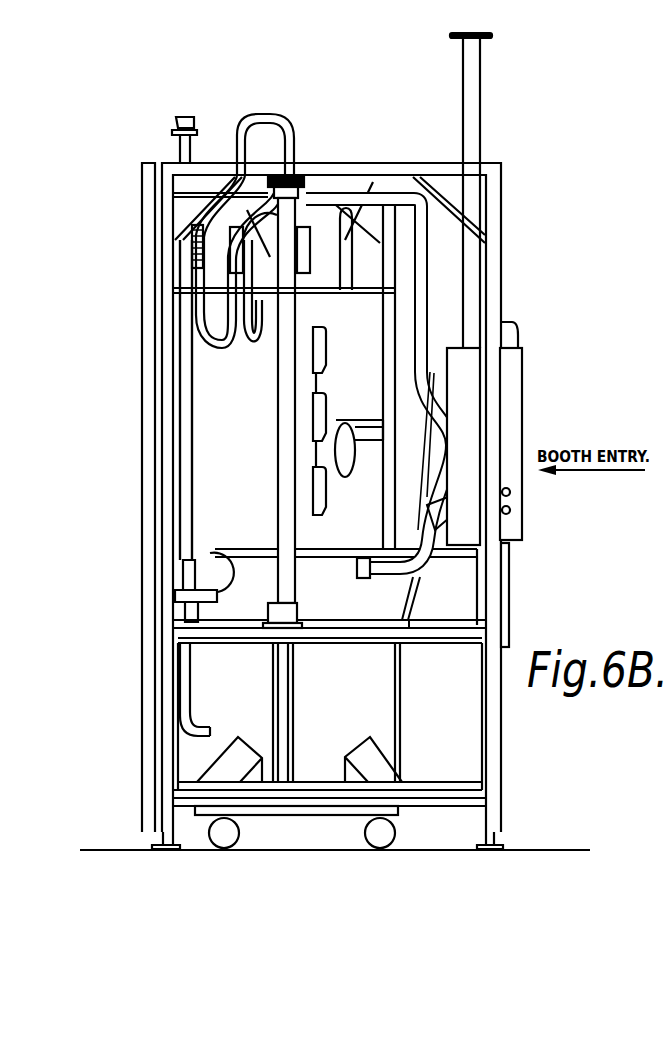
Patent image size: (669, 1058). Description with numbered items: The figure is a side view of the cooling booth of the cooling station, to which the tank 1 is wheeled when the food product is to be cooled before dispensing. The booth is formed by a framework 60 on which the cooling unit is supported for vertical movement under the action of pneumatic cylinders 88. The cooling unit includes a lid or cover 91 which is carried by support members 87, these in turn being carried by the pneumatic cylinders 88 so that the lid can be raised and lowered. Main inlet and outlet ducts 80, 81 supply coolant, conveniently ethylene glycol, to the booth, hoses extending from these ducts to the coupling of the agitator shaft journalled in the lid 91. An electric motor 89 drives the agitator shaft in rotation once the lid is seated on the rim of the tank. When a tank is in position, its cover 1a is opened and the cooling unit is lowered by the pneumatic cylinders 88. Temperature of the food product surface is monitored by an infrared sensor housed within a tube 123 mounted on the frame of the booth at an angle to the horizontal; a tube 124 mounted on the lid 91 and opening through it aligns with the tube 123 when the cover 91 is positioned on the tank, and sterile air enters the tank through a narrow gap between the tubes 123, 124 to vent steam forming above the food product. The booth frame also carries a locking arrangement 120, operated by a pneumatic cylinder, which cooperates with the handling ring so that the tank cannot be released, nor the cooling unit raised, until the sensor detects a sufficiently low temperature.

The tank 1 is at (227, 703).
The cover 1a is at (443, 443).
The framework 60 is at (493, 588).
The main inlet duct 80 is at (187, 451).
The main outlet duct 81 is at (430, 283).
The support member 87 is at (307, 257).
The pneumatic cylinder 88 is at (283, 482).
The electric motor 89 is at (183, 272).
The lid or cover 91 is at (363, 293).
The locking arrangement 120 is at (213, 552).
The tube 123 is at (343, 465).
The tube 124 is at (350, 243).